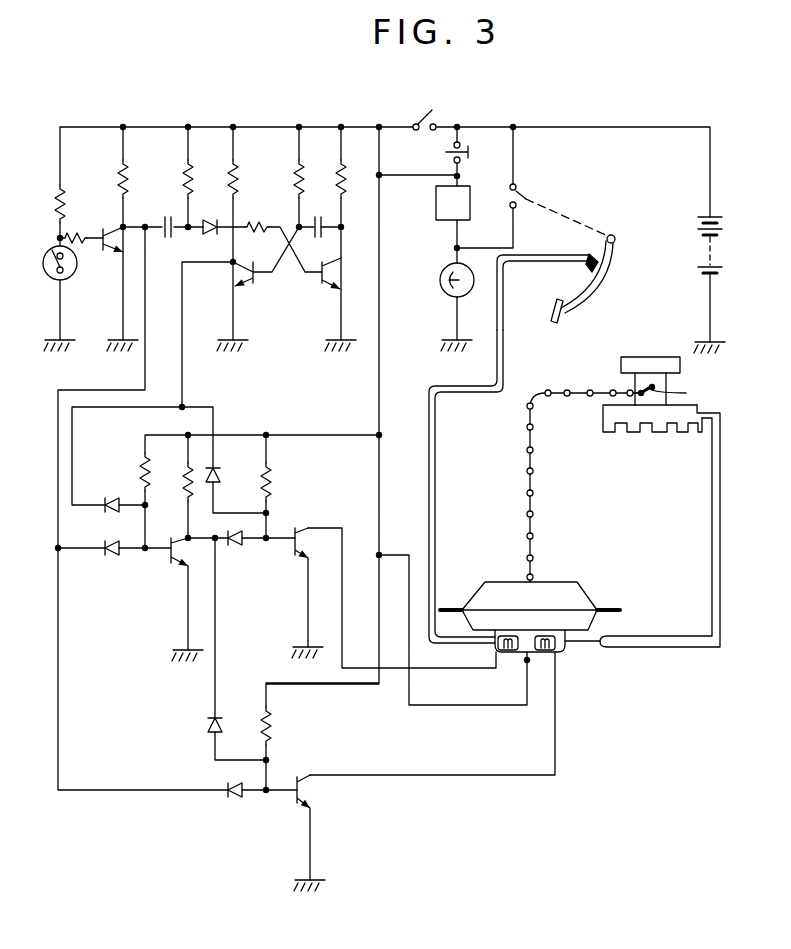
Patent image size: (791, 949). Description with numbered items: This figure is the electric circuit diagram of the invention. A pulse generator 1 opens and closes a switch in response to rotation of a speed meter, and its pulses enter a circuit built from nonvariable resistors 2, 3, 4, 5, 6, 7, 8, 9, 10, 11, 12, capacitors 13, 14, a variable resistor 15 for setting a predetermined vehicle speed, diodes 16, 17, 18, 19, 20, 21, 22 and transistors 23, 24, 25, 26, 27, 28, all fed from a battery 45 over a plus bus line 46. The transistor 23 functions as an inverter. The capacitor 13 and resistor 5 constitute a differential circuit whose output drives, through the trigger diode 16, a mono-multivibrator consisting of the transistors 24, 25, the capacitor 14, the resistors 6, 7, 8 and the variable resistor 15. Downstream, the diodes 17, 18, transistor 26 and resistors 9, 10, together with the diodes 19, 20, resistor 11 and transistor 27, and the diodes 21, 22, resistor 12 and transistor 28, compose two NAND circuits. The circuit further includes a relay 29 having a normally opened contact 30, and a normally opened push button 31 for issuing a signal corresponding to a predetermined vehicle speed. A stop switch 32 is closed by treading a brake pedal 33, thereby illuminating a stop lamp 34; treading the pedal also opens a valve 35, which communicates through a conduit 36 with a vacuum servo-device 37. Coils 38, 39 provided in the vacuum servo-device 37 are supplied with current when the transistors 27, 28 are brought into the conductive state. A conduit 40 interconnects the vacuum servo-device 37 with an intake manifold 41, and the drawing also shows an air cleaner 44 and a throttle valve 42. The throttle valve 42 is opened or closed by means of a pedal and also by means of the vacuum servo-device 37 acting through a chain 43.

The pulse generator 1 is at (43, 268).
The nonvariable resistor 2 is at (52, 208).
The nonvariable resistor 3 is at (93, 243).
The nonvariable resistor 4 is at (126, 191).
The nonvariable resistor 5 is at (190, 191).
The nonvariable resistor 6 is at (240, 177).
The nonvariable resistor 7 is at (256, 226).
The nonvariable resistor 8 is at (346, 185).
The nonvariable resistor 9 is at (150, 468).
The nonvariable resistor 10 is at (186, 480).
The nonvariable resistor 11 is at (272, 468).
The nonvariable resistor 12 is at (275, 722).
The capacitor 13 is at (165, 225).
The capacitor 14 is at (303, 236).
The variable resistor 15 is at (301, 170).
The trigger diode 16 is at (207, 236).
The diode 17 is at (108, 500).
The diode 18 is at (108, 556).
The diode 19 is at (220, 475).
The diode 20 is at (236, 548).
The diode 21 is at (206, 727).
The diode 22 is at (237, 798).
The transistor 23 is at (110, 228).
The transistor 24 is at (240, 283).
The transistor 25 is at (322, 283).
The transistor 26 is at (178, 566).
The transistor 27 is at (297, 561).
The transistor 28 is at (295, 804).
The relay 29 is at (446, 221).
The normally opened contact 30 is at (432, 112).
The normally opened push button 31 is at (470, 152).
The stop switch 32 is at (522, 190).
The brake pedal 33 is at (596, 287).
The stop lamp 34 is at (441, 272).
The valve 35 is at (590, 268).
The conduit 36 is at (437, 467).
The vacuum servo-device 37 is at (555, 592).
The coil 38 is at (508, 652).
The coil 39 is at (545, 652).
The conduit 40 is at (710, 555).
The intake manifold 41 is at (600, 419).
The throttle valve 42 is at (677, 395).
The chain 43 is at (533, 486).
The air cleaner 44 is at (647, 357).
The battery 45 is at (702, 240).
The plus bus line 46 is at (358, 127).